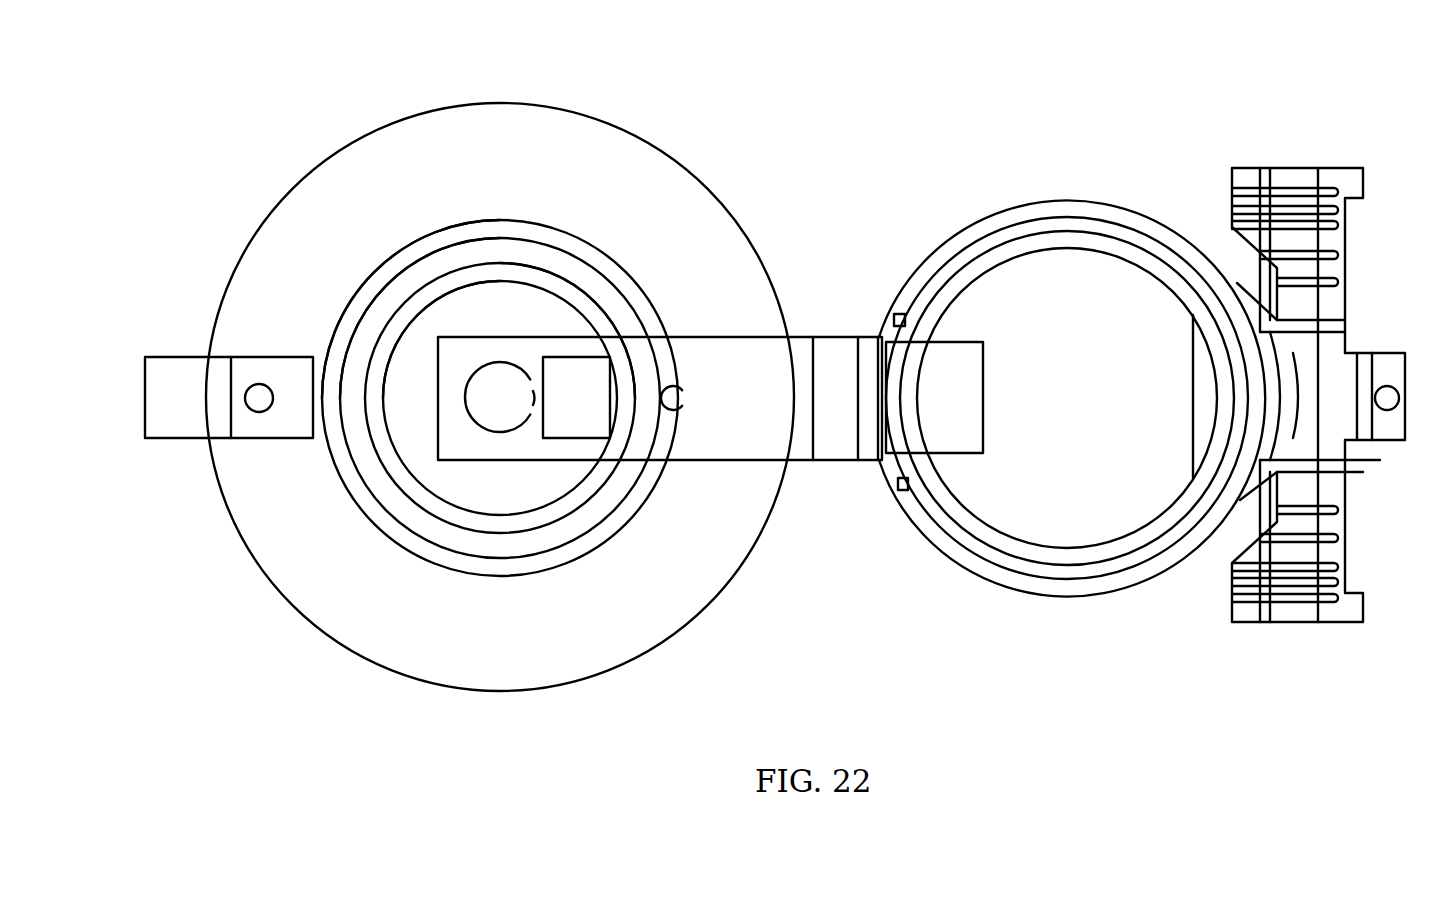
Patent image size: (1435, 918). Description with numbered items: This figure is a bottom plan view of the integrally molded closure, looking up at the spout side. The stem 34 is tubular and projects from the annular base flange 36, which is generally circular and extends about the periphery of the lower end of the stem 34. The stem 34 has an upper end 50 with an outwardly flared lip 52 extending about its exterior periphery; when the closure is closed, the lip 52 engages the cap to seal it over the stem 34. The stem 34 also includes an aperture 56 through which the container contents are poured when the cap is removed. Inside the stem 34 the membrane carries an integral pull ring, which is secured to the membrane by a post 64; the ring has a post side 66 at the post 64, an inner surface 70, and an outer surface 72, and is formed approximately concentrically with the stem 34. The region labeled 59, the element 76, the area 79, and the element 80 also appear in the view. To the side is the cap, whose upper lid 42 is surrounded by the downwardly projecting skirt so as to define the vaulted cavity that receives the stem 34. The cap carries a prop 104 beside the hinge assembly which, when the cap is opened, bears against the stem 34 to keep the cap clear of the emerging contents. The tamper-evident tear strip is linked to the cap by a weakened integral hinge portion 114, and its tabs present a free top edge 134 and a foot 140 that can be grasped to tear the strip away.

The stem 34 is at (447, 230).
The base flange 36 is at (549, 178).
The upper lid 42 is at (1053, 323).
The upper end 50 is at (568, 240).
The lip 52 is at (376, 283).
The aperture 56 is at (405, 273).
The central opening 59 is at (514, 322).
The post 64 is at (595, 393).
The post side 66 is at (628, 378).
The inner surface 70 is at (553, 293).
The outer surface 72 is at (377, 343).
The shaft 76 is at (675, 420).
The recess 79 is at (429, 440).
The ring wall 80 is at (912, 372).
The prop 104 is at (897, 488).
The weakened integral hinge portion 114 is at (1250, 297).
The free top edge 134 is at (1228, 180).
The foot 140 is at (688, 394).